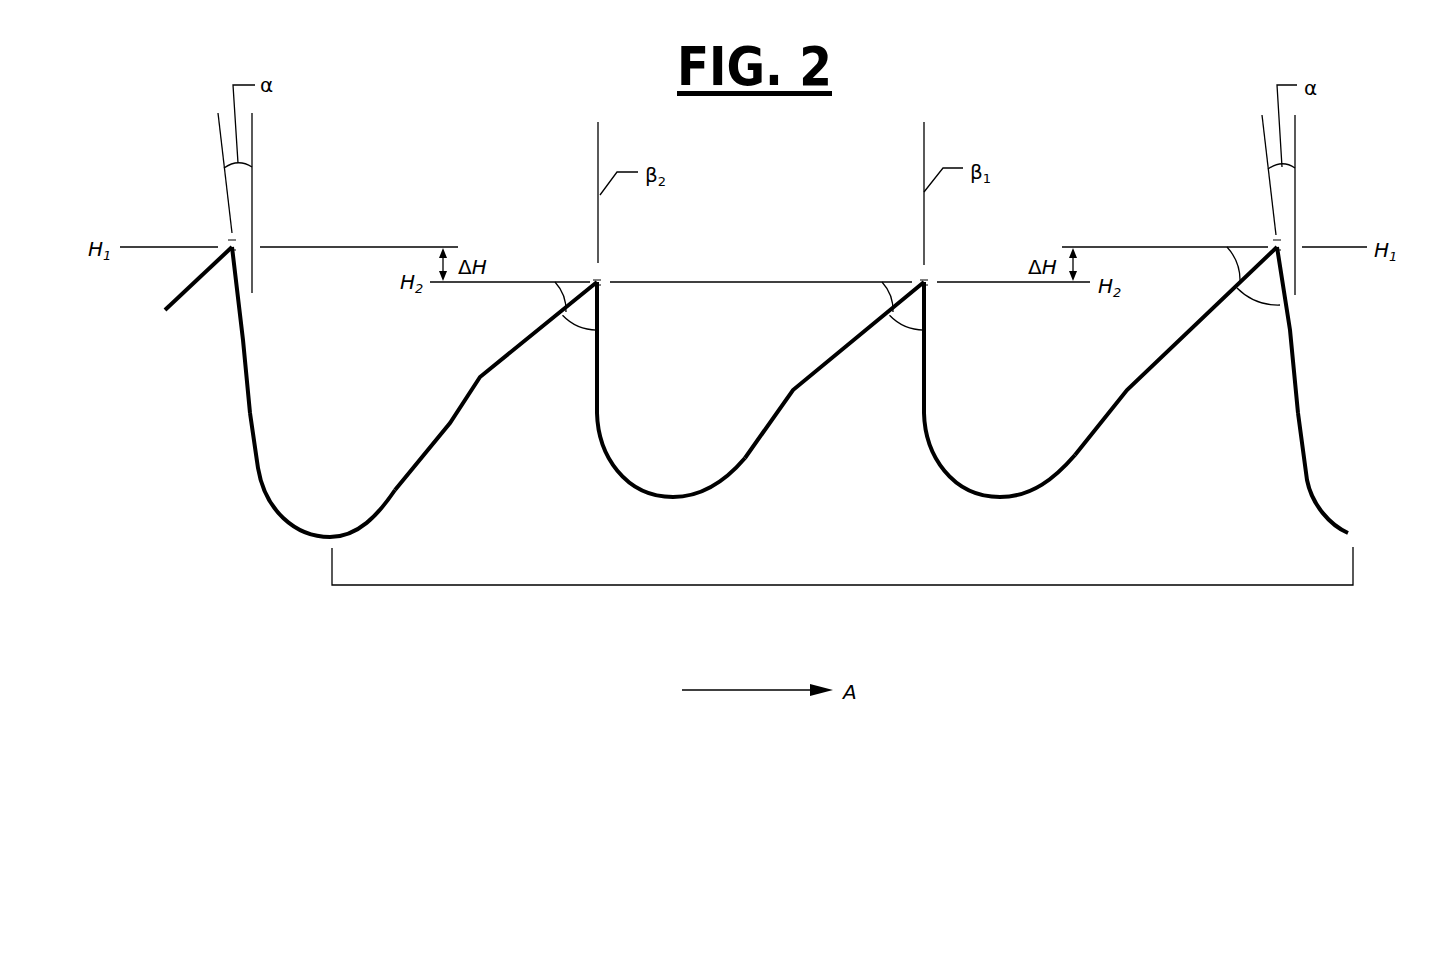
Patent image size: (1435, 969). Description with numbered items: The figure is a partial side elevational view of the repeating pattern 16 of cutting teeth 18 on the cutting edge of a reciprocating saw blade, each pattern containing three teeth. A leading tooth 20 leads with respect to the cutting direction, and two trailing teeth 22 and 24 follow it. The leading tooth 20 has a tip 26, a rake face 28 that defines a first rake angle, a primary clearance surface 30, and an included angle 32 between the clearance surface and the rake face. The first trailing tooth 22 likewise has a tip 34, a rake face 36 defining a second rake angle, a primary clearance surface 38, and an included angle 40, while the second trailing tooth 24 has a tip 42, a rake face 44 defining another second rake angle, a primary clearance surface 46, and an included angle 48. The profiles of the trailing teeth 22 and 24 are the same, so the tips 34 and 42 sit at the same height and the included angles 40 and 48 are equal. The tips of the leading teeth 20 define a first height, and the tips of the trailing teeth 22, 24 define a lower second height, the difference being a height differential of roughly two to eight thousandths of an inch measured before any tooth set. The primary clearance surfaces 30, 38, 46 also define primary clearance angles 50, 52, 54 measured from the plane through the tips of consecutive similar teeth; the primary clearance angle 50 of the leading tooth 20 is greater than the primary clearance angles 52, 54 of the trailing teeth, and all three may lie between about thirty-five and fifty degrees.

The repeating pattern 16 is at (769, 449).
The cutting teeth 18 is at (811, 240).
The leading tooth 20 is at (769, 392).
The first trailing tooth 22 is at (991, 445).
The second trailing tooth 24 is at (662, 445).
The tip 26 is at (715, 213).
The rake face 28 is at (803, 330).
The primary clearance surface 30 is at (1176, 351).
The included angle 32 is at (1239, 325).
The tip 34 is at (885, 250).
The rake face 36 is at (966, 347).
The primary clearance surface 38 is at (834, 370).
The included angle 40 is at (884, 352).
The tip 42 is at (557, 251).
The rake face 44 is at (639, 347).
The primary clearance surface 46 is at (496, 386).
The included angle 48 is at (557, 352).
The primary clearance angle 50 is at (1195, 270).
The primary clearance angle 52 is at (849, 298).
The primary clearance angle 54 is at (522, 298).